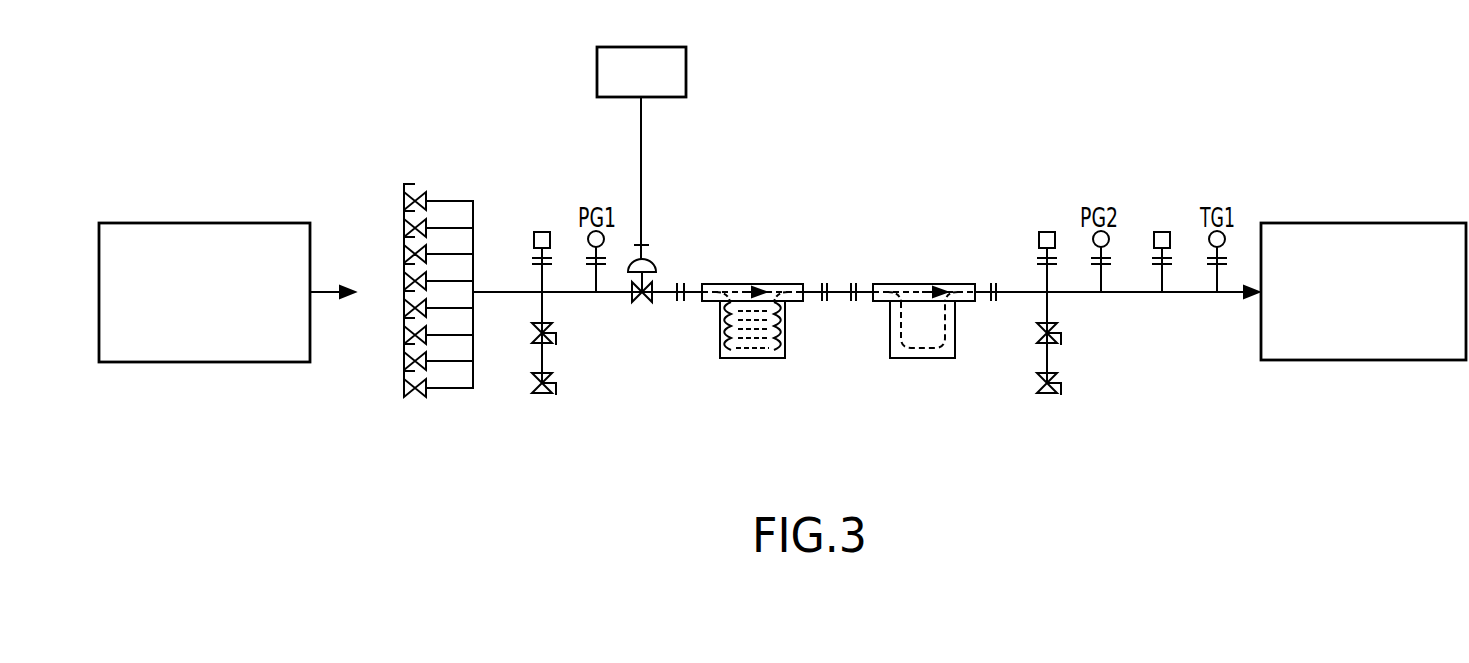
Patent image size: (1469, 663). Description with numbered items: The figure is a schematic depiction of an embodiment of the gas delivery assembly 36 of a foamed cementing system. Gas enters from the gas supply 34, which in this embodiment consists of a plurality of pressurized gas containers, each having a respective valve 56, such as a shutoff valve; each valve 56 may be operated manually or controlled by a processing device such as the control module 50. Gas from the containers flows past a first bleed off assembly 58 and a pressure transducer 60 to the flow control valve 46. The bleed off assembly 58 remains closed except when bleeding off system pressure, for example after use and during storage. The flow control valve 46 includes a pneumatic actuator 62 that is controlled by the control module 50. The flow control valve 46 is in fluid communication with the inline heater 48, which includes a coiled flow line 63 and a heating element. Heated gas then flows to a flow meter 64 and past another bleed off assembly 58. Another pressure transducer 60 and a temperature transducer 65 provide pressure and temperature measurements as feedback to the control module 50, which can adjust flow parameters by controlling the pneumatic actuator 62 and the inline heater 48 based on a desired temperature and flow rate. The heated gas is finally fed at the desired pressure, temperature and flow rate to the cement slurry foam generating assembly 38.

The gas supply 34 is at (203, 223).
The gas delivery assembly 36 is at (903, 196).
The cement slurry foam generating assembly 38 is at (1352, 223).
The flow control valve 46 is at (643, 303).
The inline heater 48 is at (742, 356).
The control module 50 is at (686, 69).
The valve 56 is at (428, 194).
The bleed off assembly 58 is at (560, 379).
The pressure transducer 60 is at (534, 238).
The pneumatic actuator 62 is at (652, 262).
The coiled flow line 63 is at (730, 340).
The flow meter 64 is at (898, 360).
The temperature transducer 65 is at (1165, 244).